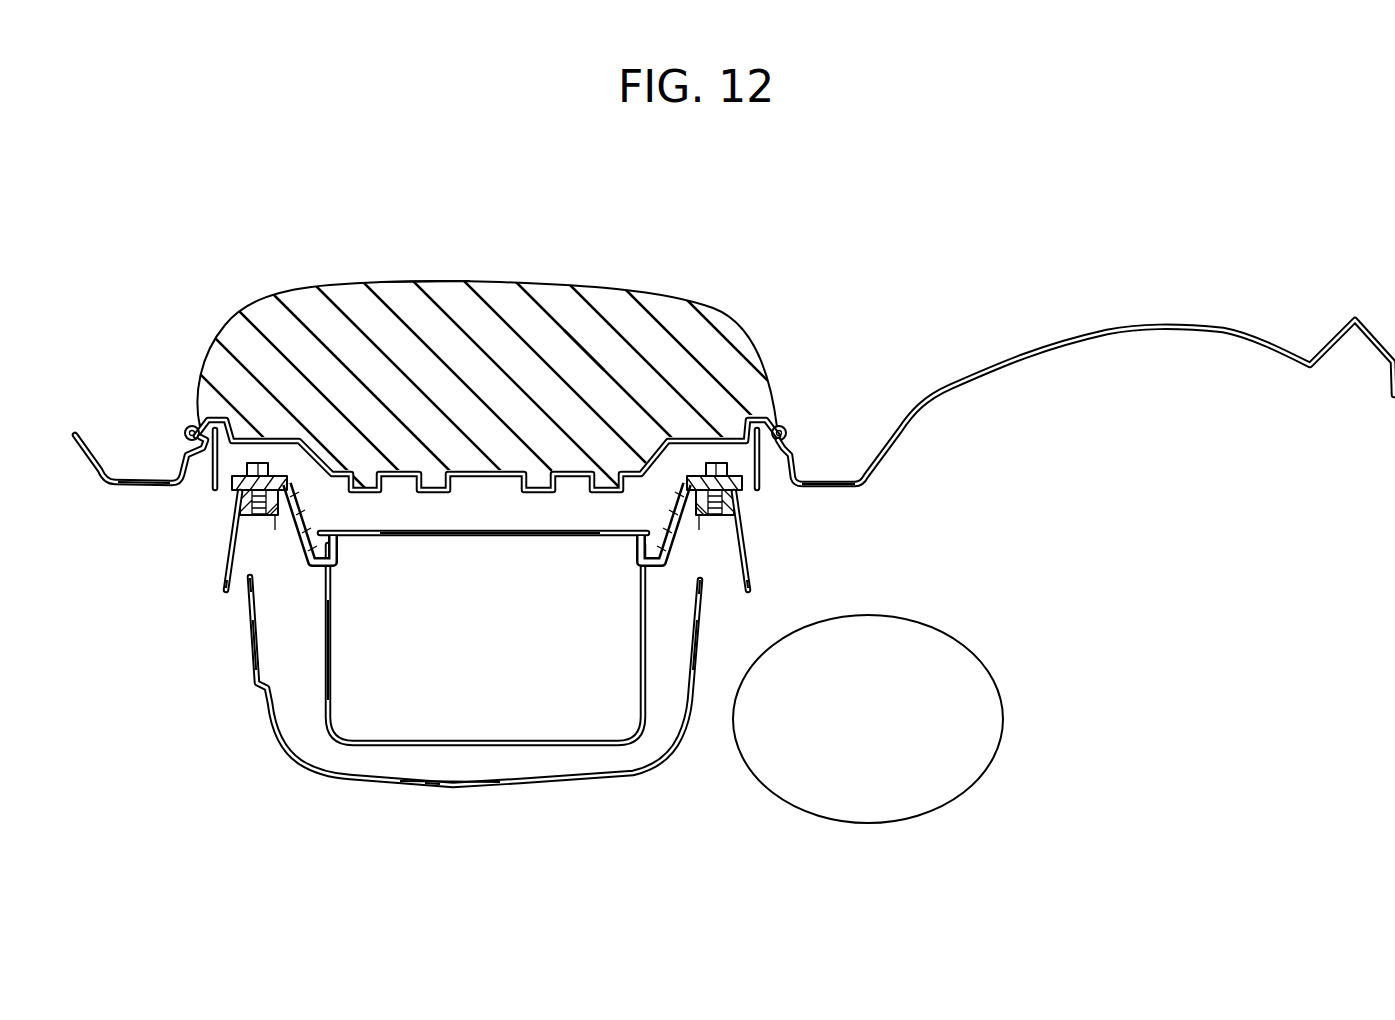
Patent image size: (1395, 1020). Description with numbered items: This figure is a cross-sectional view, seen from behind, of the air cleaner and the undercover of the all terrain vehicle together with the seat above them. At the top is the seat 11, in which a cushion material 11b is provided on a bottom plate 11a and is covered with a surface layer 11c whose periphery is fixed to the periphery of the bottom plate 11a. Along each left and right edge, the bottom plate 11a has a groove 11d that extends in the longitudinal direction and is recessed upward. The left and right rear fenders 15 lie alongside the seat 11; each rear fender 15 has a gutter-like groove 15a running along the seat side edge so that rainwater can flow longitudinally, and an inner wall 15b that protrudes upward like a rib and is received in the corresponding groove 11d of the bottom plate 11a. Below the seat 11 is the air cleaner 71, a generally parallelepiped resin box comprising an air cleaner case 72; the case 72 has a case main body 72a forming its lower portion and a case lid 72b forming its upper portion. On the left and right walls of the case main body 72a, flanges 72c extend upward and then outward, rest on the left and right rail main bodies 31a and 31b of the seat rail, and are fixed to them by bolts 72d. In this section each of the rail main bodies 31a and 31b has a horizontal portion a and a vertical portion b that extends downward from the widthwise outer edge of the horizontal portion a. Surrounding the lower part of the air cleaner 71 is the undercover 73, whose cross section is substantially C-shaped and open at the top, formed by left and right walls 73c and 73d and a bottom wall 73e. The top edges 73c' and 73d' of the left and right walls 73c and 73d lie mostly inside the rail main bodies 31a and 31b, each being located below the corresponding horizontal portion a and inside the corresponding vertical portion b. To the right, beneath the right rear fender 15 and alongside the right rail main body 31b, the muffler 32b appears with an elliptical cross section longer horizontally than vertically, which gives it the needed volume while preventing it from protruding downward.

The seat 11 is at (442, 284).
The bottom plate 11a is at (474, 470).
The cushion material 11b is at (583, 305).
The surface layer 11c is at (512, 283).
The groove 11d is at (200, 412).
The rear fender 15 is at (90, 437).
The gutter-like groove 15a is at (125, 470).
The inner wall 15b is at (190, 412).
The left rail main body 31a is at (232, 538).
The right rail main body 31b is at (746, 534).
The muffler 32b is at (955, 645).
The air cleaner 71 is at (432, 760).
The air cleaner case 72 is at (388, 741).
The case main body 72a is at (338, 688).
The case lid 72b is at (398, 538).
The flange 72c is at (305, 500).
The bolt 72d is at (260, 463).
The undercover 73 is at (276, 751).
The left wall 73c is at (210, 654).
The top edge 73c' is at (282, 595).
The right wall 73d is at (724, 649).
The top edge 73d' is at (734, 605).
The bottom wall 73e is at (457, 787).
The horizontal portion a is at (233, 494).
The vertical portion b is at (226, 575).